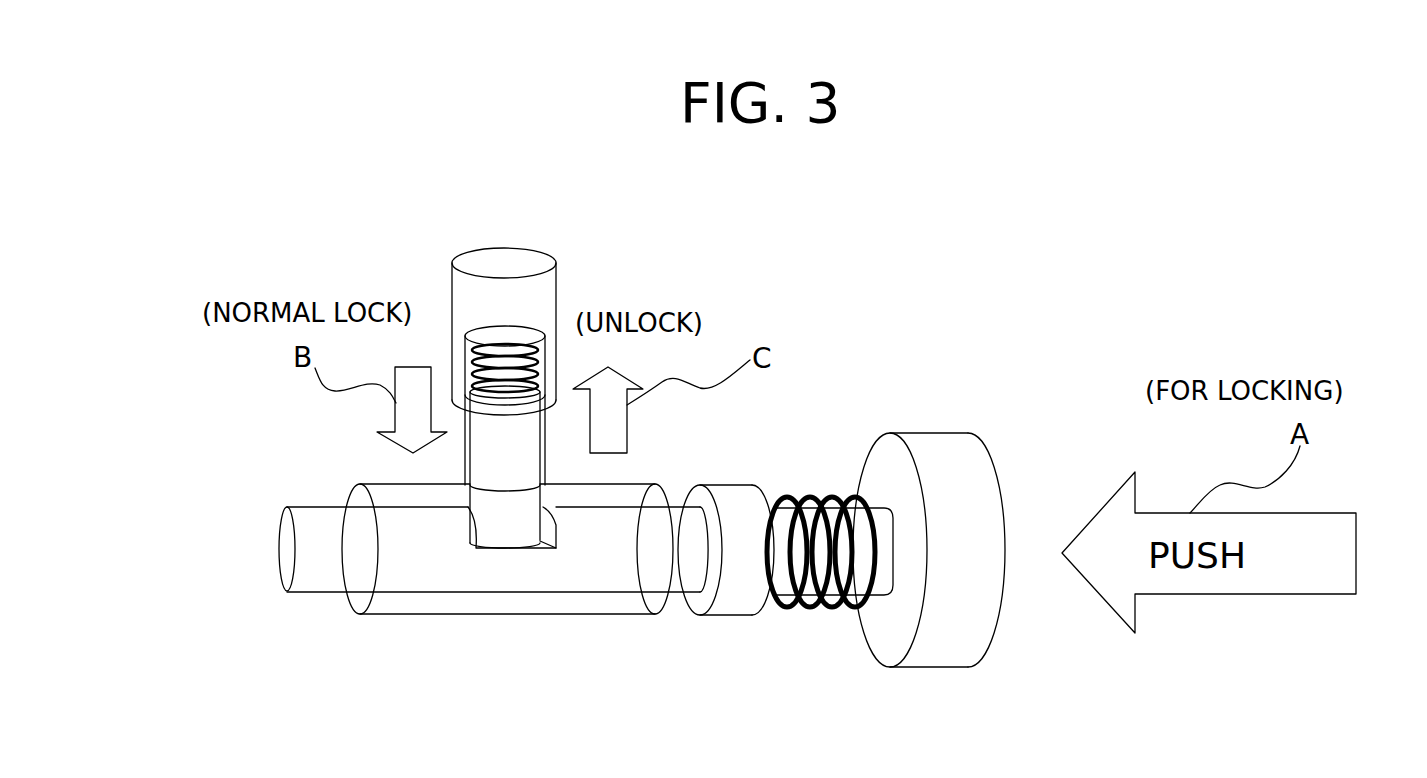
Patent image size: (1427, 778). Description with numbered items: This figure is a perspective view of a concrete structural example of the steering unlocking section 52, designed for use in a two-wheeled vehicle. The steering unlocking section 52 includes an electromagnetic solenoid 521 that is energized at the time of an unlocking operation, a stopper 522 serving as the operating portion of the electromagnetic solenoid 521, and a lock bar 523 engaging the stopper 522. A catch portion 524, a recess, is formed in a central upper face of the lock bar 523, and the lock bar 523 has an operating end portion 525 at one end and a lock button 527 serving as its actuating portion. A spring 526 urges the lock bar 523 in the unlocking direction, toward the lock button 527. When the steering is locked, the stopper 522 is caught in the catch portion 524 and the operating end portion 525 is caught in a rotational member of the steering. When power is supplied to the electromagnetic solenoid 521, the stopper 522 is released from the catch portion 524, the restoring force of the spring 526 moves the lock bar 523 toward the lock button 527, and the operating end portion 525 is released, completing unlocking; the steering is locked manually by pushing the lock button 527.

The steering unlocking section 52 is at (864, 367).
The electromagnetic solenoid 521 is at (545, 304).
The stopper 522 is at (520, 480).
The lock bar 523 is at (455, 592).
The catch portion 524 is at (497, 548).
The operating end portion 525 is at (293, 560).
The spring 526 is at (832, 607).
The lock button 527 is at (918, 447).